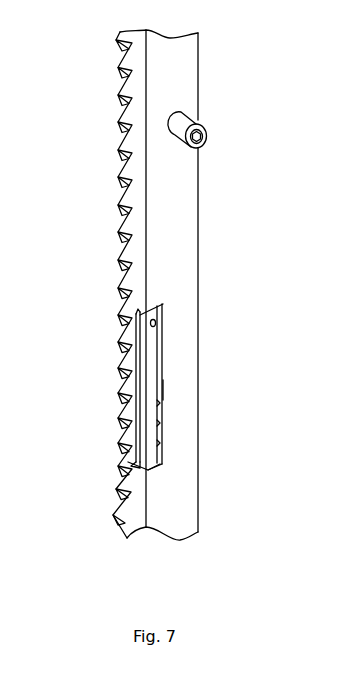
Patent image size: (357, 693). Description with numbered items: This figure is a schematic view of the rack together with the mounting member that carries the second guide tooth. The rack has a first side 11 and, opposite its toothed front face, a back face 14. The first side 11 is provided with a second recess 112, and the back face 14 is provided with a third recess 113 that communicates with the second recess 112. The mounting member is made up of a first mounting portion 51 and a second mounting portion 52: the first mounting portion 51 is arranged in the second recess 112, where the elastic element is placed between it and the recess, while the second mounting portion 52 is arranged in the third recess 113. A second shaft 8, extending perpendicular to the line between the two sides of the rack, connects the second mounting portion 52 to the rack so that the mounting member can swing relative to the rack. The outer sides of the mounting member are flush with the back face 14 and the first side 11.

The back face 14 is at (161, 285).
The first side 11 is at (118, 500).
The second shaft 8 is at (156, 323).
The second mounting portion 52 is at (158, 357).
The third recess 113 is at (168, 390).
The first mounting portion 51 is at (136, 432).
The second recess 112 is at (133, 467).